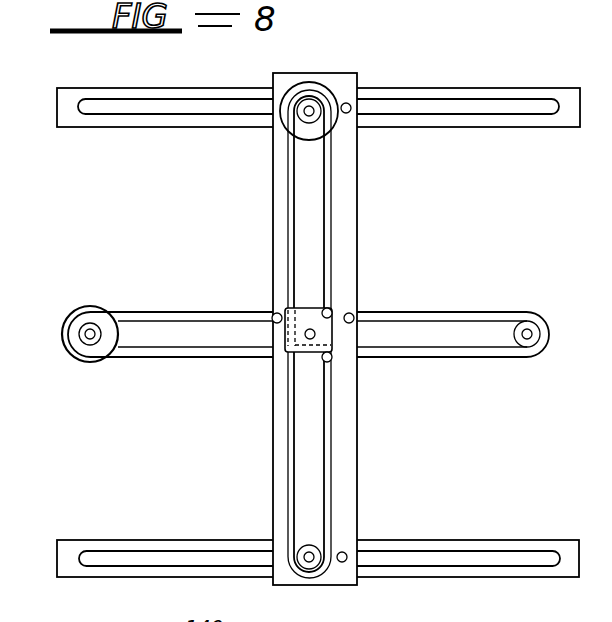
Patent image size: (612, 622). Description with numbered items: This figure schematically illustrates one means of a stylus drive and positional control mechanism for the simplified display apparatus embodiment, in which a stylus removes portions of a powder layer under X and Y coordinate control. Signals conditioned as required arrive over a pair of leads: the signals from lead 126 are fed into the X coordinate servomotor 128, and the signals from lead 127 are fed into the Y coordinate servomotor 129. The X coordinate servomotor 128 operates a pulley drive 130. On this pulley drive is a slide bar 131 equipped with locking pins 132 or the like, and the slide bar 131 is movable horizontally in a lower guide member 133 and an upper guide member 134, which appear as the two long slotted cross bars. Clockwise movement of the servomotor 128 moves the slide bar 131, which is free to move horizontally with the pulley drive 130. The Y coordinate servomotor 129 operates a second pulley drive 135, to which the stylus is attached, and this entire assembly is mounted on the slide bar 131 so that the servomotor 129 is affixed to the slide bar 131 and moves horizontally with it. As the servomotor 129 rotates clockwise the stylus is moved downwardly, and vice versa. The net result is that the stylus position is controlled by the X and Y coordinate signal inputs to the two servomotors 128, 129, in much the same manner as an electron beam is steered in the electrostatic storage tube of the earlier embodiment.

The lead 126 is at (83, 364).
The lead 127 is at (332, 91).
The X coordinate servomotor 128 is at (72, 314).
The Y coordinate servomotor 129 is at (315, 89).
The pulley drive 130 is at (437, 319).
The slide bar 131 is at (350, 443).
The locking pins 132 is at (345, 562).
The lower guide member 133 is at (509, 560).
The upper guide member 134 is at (539, 107).
The second pulley drive 135 is at (325, 213).